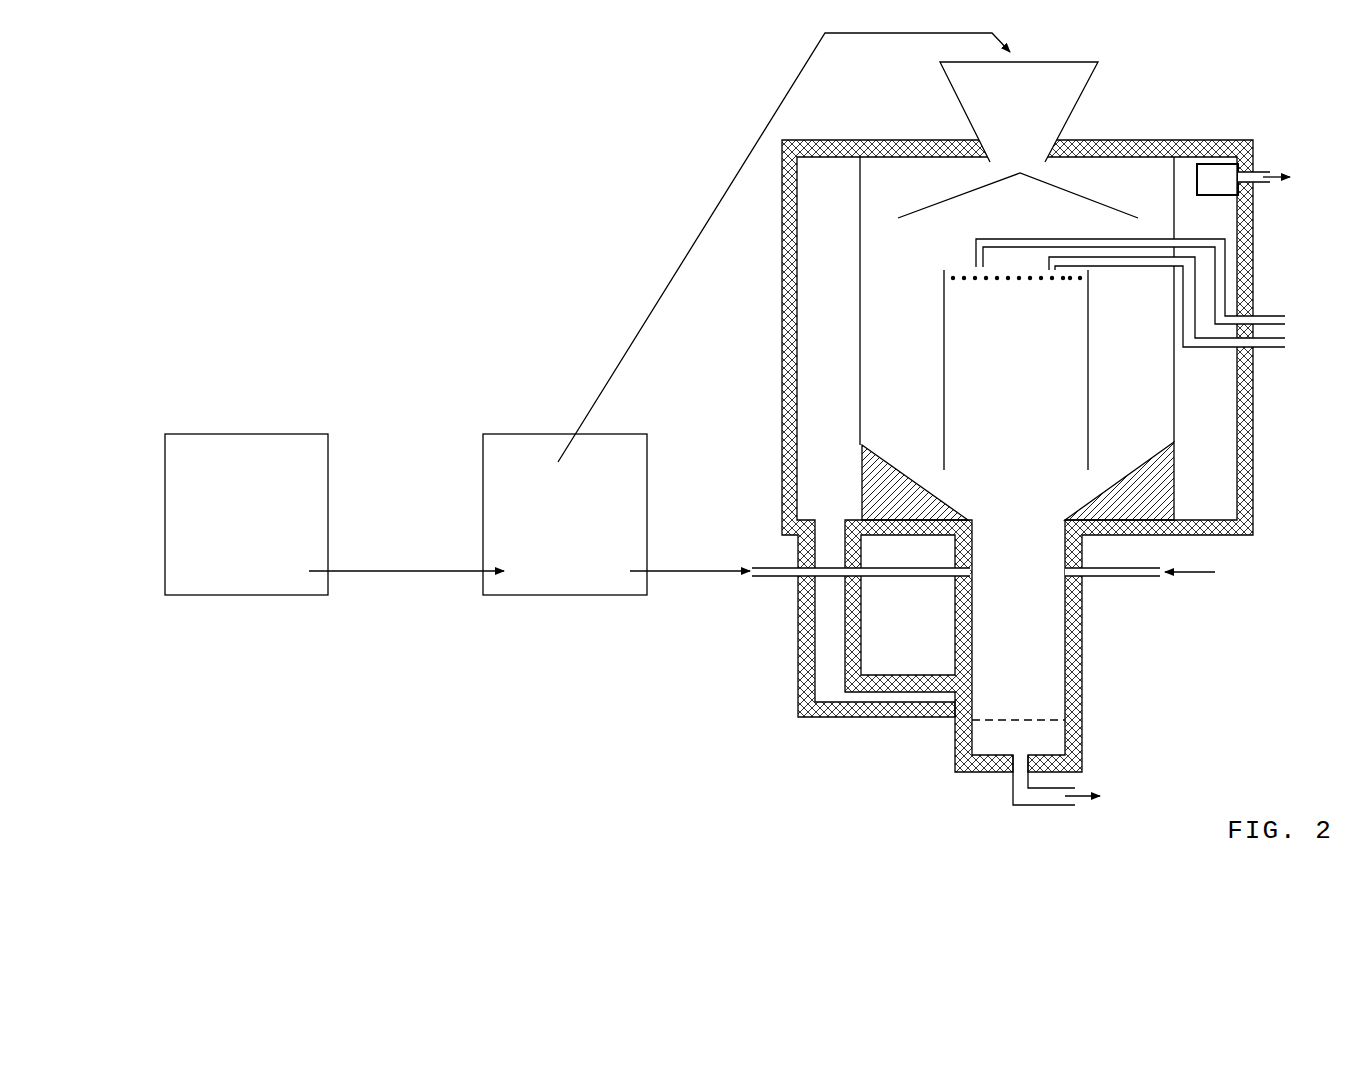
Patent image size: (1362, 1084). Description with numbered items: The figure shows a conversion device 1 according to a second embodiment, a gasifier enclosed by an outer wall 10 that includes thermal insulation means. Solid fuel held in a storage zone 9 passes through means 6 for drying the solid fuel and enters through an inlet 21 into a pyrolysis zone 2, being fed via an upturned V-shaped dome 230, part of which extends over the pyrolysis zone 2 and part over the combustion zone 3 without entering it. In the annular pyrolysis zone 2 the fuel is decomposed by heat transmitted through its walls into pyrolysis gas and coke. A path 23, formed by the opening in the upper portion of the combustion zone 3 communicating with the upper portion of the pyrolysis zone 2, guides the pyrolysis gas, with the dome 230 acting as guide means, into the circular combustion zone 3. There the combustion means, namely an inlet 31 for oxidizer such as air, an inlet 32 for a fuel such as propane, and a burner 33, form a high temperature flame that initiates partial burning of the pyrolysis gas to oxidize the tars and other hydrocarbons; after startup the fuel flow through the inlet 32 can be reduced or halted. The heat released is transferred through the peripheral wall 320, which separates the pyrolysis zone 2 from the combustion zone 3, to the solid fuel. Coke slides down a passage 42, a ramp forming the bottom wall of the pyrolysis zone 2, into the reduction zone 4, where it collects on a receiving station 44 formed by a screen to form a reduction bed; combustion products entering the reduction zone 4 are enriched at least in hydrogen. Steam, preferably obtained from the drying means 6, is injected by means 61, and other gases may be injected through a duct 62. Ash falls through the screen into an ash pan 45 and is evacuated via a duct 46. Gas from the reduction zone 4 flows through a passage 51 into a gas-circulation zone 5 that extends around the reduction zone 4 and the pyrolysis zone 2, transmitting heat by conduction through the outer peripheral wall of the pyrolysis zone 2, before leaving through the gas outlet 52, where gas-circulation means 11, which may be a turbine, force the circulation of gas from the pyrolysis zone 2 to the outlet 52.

The conversion device 1 is at (1208, 138).
The outer wall 10 is at (1253, 492).
The inlet 21 is at (1054, 60).
The gas-circulation means 11 is at (1215, 195).
The gas outlet 52 is at (1265, 172).
The upturned V-shaped dome 230 is at (963, 199).
The gas-circulation zone 5 is at (820, 413).
The pyrolysis zone 2 is at (897, 413).
The combustion zone 3 is at (1005, 413).
The path 23 is at (935, 270).
The burner 33 is at (1009, 292).
The inlet for oxidizer 31 is at (1283, 314).
The inlet for fuel 32 is at (1282, 347).
The peripheral wall 320 is at (943, 422).
The passage 42 is at (952, 500).
The reduction zone 4 is at (1011, 613).
The means for injecting steam 61 is at (892, 575).
The duct 62 is at (1137, 575).
The passage 51 is at (960, 695).
The receiving station 44 is at (1040, 720).
The ash pan 45 is at (985, 754).
The duct 46 is at (1048, 805).
The storage zone 9 is at (240, 523).
The drying means 6 is at (559, 523).